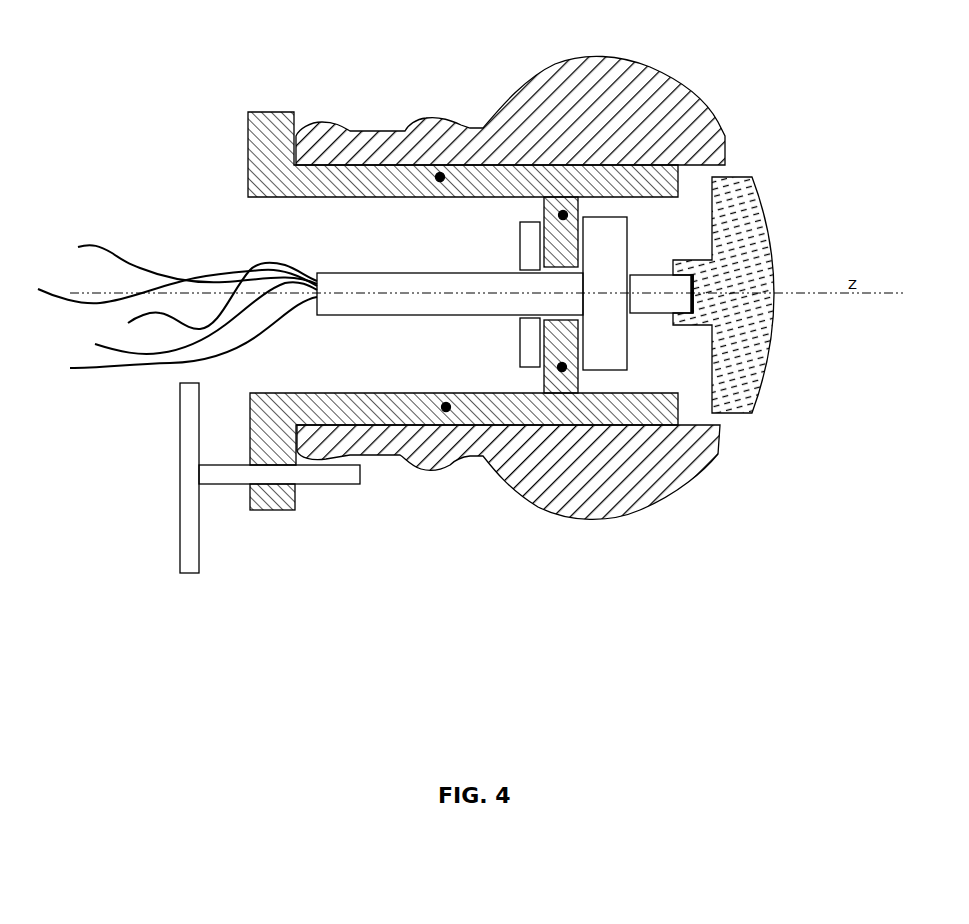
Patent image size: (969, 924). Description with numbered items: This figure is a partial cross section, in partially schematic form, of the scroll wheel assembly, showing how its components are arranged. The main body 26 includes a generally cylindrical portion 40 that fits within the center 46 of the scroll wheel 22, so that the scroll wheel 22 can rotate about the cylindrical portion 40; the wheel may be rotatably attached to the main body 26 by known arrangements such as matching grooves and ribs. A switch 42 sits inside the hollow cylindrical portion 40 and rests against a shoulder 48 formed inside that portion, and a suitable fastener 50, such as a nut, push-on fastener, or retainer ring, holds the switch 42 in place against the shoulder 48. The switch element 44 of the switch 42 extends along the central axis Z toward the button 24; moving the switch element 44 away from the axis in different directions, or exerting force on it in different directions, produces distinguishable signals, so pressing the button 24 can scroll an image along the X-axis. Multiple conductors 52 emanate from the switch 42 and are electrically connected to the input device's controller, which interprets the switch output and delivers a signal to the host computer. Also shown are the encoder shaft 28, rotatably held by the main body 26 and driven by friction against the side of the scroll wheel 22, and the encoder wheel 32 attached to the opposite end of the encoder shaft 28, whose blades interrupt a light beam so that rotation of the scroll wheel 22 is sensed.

The rotatable member 22 is at (672, 521).
The button 24 is at (746, 405).
The main body 26 is at (288, 95).
The encoder shaft 28 is at (311, 501).
The encoder wheel 32 is at (197, 596).
The cylindrical portion 40 is at (446, 407).
The switch 42 is at (605, 293).
The switch element 44 is at (653, 275).
The center 46 is at (699, 400).
The shoulder 48 is at (563, 215).
The fastener 50 is at (531, 335).
The conductors 52 is at (164, 219).